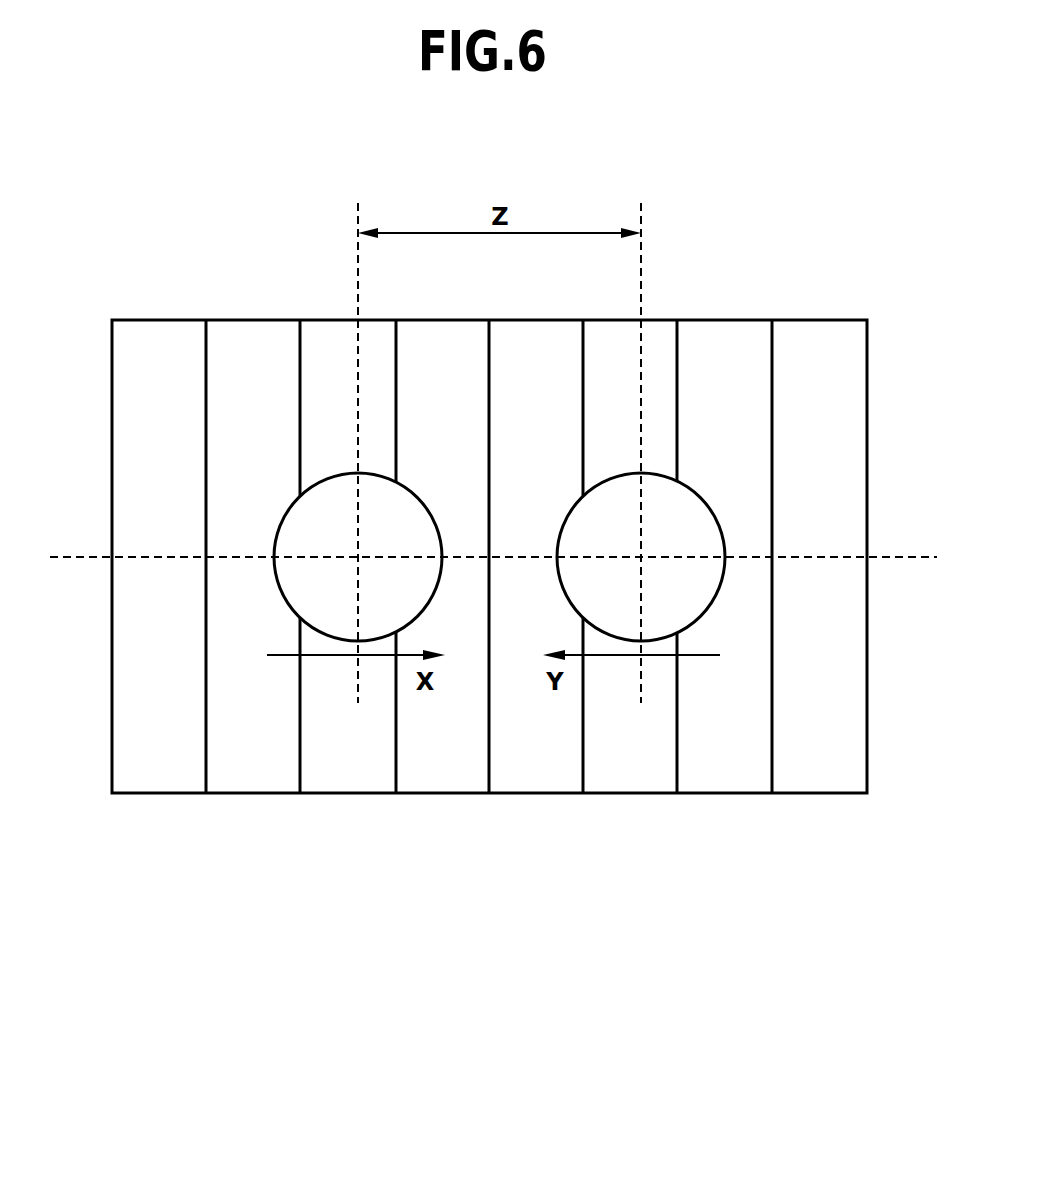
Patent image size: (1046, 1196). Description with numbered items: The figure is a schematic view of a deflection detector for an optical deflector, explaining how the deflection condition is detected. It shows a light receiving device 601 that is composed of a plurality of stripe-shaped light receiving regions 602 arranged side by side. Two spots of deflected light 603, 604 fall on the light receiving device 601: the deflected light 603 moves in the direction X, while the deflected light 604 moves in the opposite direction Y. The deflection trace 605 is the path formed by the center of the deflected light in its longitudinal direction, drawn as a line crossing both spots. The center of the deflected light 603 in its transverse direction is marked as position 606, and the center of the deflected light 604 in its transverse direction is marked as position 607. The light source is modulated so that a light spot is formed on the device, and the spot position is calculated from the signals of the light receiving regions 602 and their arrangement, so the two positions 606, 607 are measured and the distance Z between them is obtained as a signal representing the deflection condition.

The light receiving device 601 is at (730, 319).
The stripe-shaped light receiving region 602 is at (817, 761).
The deflected light 603 is at (340, 517).
The deflected light 604 is at (689, 515).
The deflection trace 605 is at (493, 538).
The center of the deflected light 603 in its transverse direction 606 is at (358, 439).
The center of the deflected light 604 in its transverse direction 607 is at (642, 439).